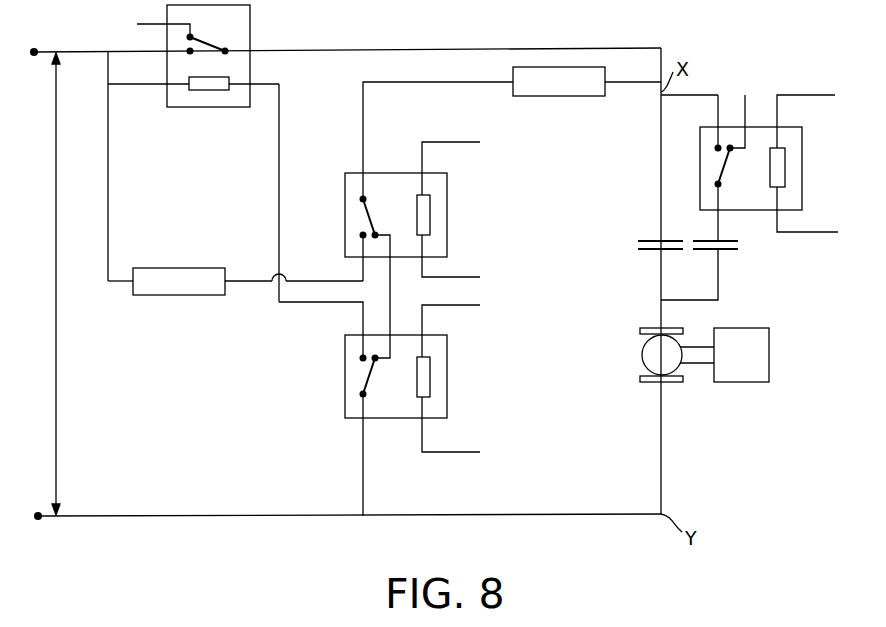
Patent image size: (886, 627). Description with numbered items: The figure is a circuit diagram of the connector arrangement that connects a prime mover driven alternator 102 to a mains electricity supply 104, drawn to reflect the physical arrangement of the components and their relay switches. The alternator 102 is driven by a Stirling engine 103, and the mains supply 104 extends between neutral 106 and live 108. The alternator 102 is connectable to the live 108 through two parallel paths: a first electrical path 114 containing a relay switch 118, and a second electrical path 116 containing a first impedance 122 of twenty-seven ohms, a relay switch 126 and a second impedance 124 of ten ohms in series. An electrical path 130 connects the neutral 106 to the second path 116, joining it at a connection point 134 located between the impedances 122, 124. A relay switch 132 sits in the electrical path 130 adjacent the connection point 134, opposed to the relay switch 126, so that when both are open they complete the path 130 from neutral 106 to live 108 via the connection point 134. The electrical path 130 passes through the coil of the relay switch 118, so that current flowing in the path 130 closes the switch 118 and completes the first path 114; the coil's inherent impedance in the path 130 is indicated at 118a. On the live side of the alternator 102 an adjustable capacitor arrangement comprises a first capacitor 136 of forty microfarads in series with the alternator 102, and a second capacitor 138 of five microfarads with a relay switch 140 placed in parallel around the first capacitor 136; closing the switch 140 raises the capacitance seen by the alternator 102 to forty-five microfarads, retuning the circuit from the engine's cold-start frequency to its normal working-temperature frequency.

The alternator 102 is at (640, 352).
The Stirling engine 103 is at (724, 355).
The mains electricity supply 104 is at (58, 368).
The neutral 106 is at (40, 519).
The live 108 is at (36, 50).
The first electrical path 114 is at (432, 49).
The second electrical path 116 is at (108, 200).
The relay switch 118 is at (236, 24).
The coil impedance 118a is at (218, 76).
The first impedance 122 is at (560, 97).
The second impedance 124 is at (170, 268).
The relay switch 126 is at (436, 185).
The electrical path 130 is at (278, 198).
The relay switch 132 is at (436, 346).
The connection point 134 is at (392, 292).
The first capacitor 136 is at (640, 250).
The second capacitor 138 is at (736, 250).
The relay switch 140 is at (784, 137).